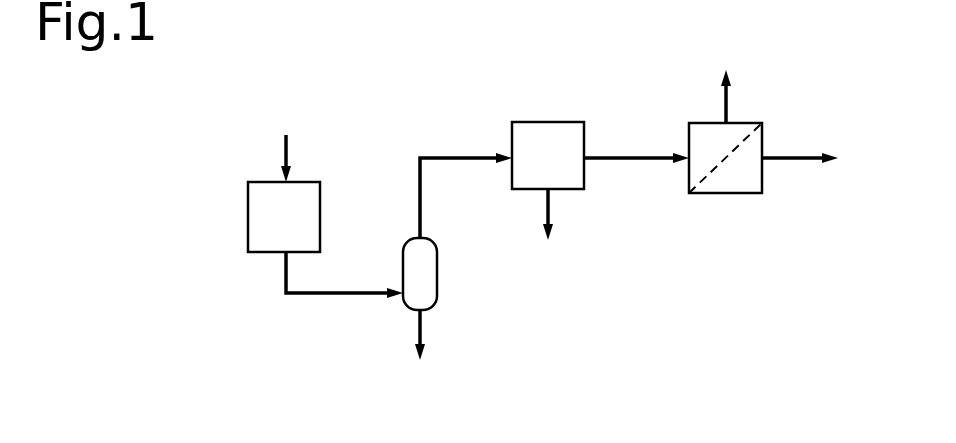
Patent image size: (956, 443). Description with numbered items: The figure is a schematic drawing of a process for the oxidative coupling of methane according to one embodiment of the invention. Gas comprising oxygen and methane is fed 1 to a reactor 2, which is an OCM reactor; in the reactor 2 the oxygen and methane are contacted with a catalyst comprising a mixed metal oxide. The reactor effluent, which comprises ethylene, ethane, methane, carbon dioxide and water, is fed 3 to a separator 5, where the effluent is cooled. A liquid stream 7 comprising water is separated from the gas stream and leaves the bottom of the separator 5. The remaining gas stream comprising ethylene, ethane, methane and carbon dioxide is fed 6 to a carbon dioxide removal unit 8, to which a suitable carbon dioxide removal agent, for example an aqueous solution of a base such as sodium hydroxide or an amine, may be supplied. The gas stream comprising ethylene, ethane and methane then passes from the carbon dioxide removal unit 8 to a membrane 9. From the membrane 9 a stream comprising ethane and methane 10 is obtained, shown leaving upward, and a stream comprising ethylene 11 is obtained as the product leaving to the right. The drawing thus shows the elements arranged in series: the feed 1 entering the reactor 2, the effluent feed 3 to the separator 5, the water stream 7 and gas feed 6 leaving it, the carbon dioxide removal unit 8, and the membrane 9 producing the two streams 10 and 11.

The feed of gas comprising oxygen and methane 1 is at (273, 155).
The reactor 2 is at (272, 217).
The reactor effluent feed 3 is at (344, 275).
The separator 5 is at (431, 274).
The gas stream feed 6 is at (466, 180).
The liquid stream 7 is at (431, 338).
The carbon dioxide removal unit 8 is at (548, 155).
The membrane 9 is at (725, 177).
The stream comprising ethane and methane 10 is at (707, 92).
The stream comprising ethylene 11 is at (803, 140).